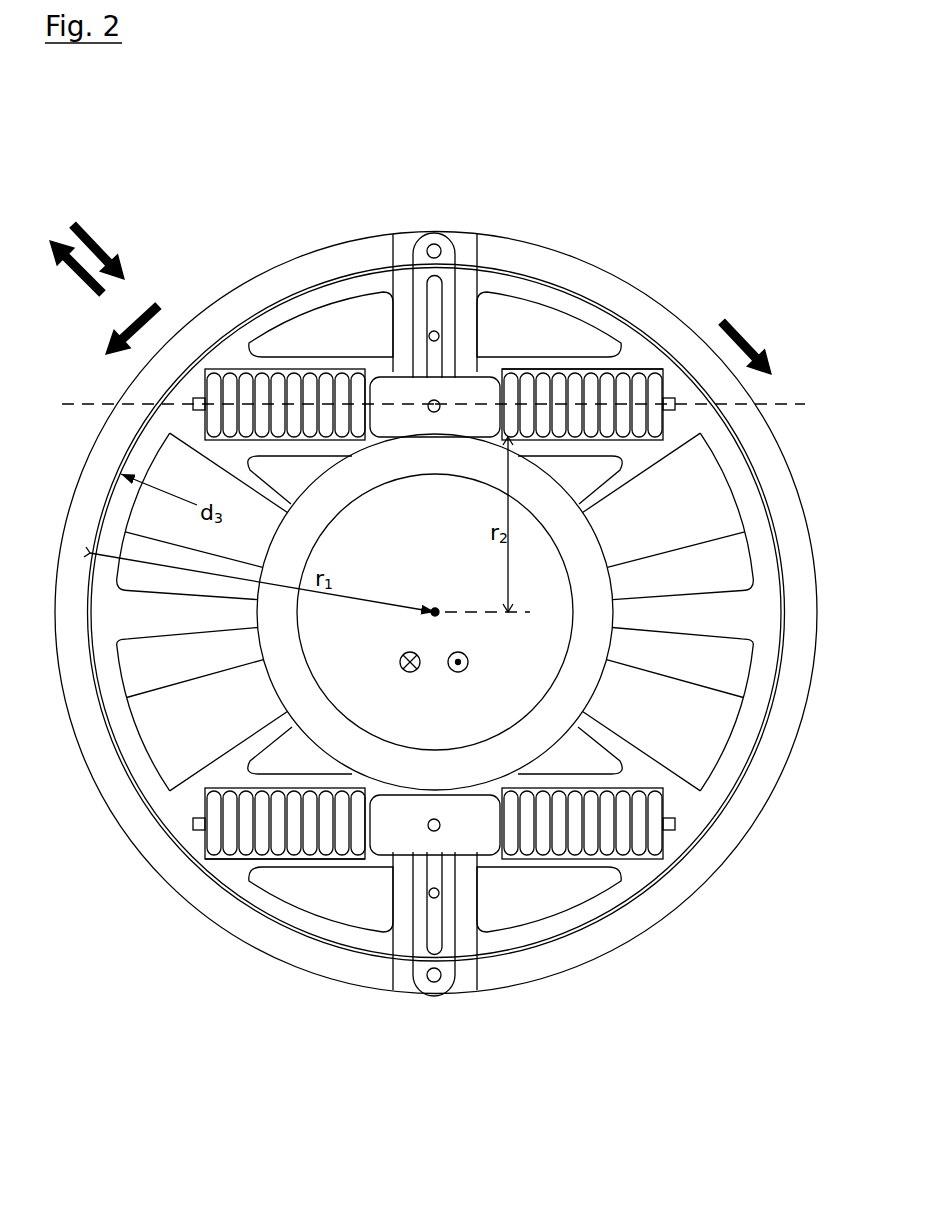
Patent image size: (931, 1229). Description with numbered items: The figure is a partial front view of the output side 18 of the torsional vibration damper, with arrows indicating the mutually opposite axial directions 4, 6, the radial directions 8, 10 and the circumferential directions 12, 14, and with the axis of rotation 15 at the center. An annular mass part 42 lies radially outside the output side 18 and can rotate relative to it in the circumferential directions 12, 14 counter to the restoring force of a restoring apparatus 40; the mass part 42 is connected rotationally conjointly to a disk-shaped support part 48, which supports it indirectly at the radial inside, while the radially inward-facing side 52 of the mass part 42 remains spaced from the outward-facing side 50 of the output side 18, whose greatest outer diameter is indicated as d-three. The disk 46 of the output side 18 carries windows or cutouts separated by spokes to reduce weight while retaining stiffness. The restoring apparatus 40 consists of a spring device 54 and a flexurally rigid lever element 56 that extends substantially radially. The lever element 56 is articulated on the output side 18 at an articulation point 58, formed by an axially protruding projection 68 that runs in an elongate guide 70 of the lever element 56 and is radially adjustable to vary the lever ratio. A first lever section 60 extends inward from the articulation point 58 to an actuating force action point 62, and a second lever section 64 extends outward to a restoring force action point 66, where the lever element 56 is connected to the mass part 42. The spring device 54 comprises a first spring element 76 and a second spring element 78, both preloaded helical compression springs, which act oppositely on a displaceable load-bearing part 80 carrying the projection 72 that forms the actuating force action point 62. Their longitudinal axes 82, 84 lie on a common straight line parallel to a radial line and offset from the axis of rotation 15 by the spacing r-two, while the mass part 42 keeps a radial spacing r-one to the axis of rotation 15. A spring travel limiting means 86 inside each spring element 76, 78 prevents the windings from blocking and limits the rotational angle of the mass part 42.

The axial direction 4 is at (398, 662).
The axial direction 6 is at (470, 662).
The radial direction 8 is at (86, 280).
The radial direction 10 is at (93, 240).
The circumferential direction 12 is at (748, 333).
The circumferential direction 14 is at (143, 322).
The axis of rotation 15 is at (432, 615).
The output side 18 is at (147, 790).
The restoring apparatus 40 is at (522, 362).
The mass part 42 is at (97, 467).
The disk 46 is at (681, 620).
The disk-shaped support part 48 is at (679, 660).
The radially outward-facing side of the output side 50 is at (240, 328).
The radially inward-facing side of the mass part 52 is at (292, 288).
The spring device 54 is at (612, 373).
The lever element 56 is at (464, 297).
The articulation point 58 is at (432, 331).
The first lever section 60 is at (449, 354).
The actuating force action point 62 is at (431, 402).
The second lever section 64 is at (423, 287).
The restoring force action point 66 is at (436, 244).
The projection 68 is at (440, 323).
The elongate guide 70 is at (437, 305).
The projection 72 is at (449, 410).
The first spring element 76 is at (247, 410).
The second spring element 78 is at (582, 400).
The load-bearing part 80 is at (410, 420).
The longitudinal axis 82 is at (80, 401).
The longitudinal axis 84 is at (780, 400).
The spring travel limiting means 86 is at (268, 404).